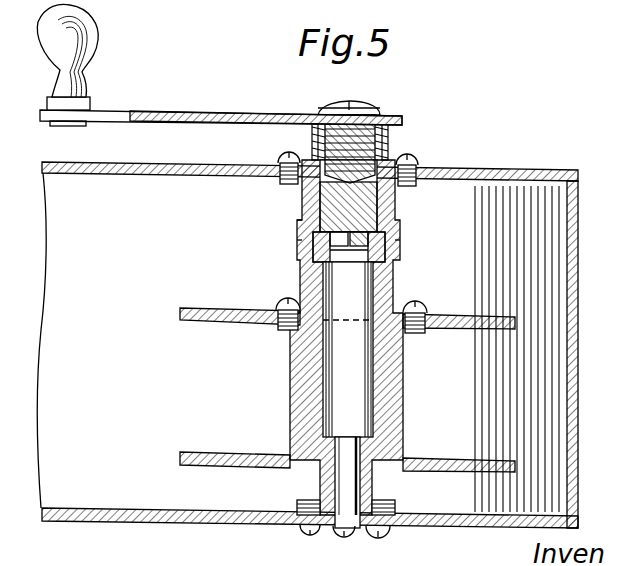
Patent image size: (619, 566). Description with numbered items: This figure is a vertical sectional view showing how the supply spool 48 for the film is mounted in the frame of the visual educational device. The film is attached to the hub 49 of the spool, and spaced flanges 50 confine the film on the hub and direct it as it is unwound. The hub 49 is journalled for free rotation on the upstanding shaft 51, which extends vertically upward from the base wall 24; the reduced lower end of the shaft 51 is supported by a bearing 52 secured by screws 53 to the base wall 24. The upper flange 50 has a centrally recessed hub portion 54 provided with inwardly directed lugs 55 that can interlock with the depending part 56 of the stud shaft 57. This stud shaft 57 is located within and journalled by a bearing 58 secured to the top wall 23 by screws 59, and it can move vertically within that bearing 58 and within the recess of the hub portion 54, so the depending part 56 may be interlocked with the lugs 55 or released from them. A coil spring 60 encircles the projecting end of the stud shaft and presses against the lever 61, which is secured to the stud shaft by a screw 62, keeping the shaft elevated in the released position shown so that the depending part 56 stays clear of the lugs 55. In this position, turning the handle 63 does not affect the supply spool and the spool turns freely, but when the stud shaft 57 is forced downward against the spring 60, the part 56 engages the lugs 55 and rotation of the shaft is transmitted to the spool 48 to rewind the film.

The top wall 23 is at (175, 163).
The base wall 24 is at (211, 522).
The spool 48 is at (429, 452).
The hub 49 is at (403, 382).
The flanges 50 is at (446, 315).
The shaft 51 is at (333, 362).
The bearing 52 is at (373, 490).
The screws 53 is at (303, 528).
The hub portion 54 is at (397, 280).
The lugs 55 is at (297, 250).
The depending part 56 is at (397, 216).
The stud shaft 57 is at (297, 222).
The bearing 58 is at (398, 186).
The screws 59 is at (410, 153).
The coil spring 60 is at (390, 136).
The lever 61 is at (253, 111).
The screw 62 is at (332, 102).
The handle 63 is at (93, 49).